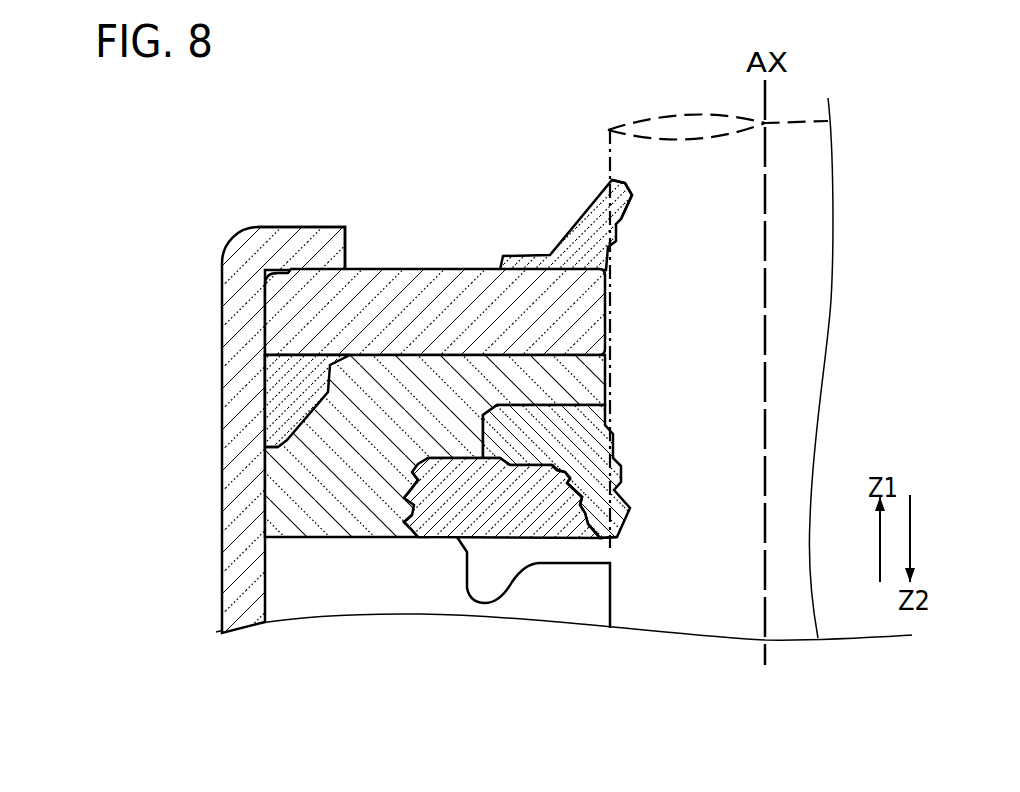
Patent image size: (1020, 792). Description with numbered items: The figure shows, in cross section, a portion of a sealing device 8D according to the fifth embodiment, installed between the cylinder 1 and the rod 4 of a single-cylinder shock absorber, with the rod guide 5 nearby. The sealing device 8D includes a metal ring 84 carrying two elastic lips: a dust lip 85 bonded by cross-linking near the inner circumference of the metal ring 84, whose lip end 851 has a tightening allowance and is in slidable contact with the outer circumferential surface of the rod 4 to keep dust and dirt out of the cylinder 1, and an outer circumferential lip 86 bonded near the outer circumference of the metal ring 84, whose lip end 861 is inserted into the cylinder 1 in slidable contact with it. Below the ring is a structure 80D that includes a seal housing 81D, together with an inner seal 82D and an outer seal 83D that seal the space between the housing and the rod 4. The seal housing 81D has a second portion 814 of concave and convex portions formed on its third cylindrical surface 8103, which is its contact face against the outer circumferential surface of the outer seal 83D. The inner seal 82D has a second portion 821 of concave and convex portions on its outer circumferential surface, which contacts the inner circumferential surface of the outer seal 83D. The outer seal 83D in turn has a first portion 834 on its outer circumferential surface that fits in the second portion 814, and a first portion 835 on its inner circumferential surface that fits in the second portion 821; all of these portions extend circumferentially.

The cylinder 1 is at (299, 226).
The rod 4 is at (608, 152).
The rod guide 5 is at (263, 597).
The sealing device 8D is at (78, 258).
The structure 80D is at (144, 436).
The seal housing 81D is at (263, 447).
The inner seal 82D is at (483, 423).
The outer seal 83D is at (418, 473).
The metal ring 84 is at (263, 322).
The dust lip 85 is at (500, 253).
The outer circumferential lip 86 is at (263, 380).
The lip end 851 is at (611, 183).
The lip end 861 is at (284, 432).
The third cylindrical surface 8103 is at (580, 496).
The second portion 814 is at (433, 515).
The second portion 821 is at (567, 505).
The first portion 834 is at (400, 505).
The first portion 835 is at (600, 520).